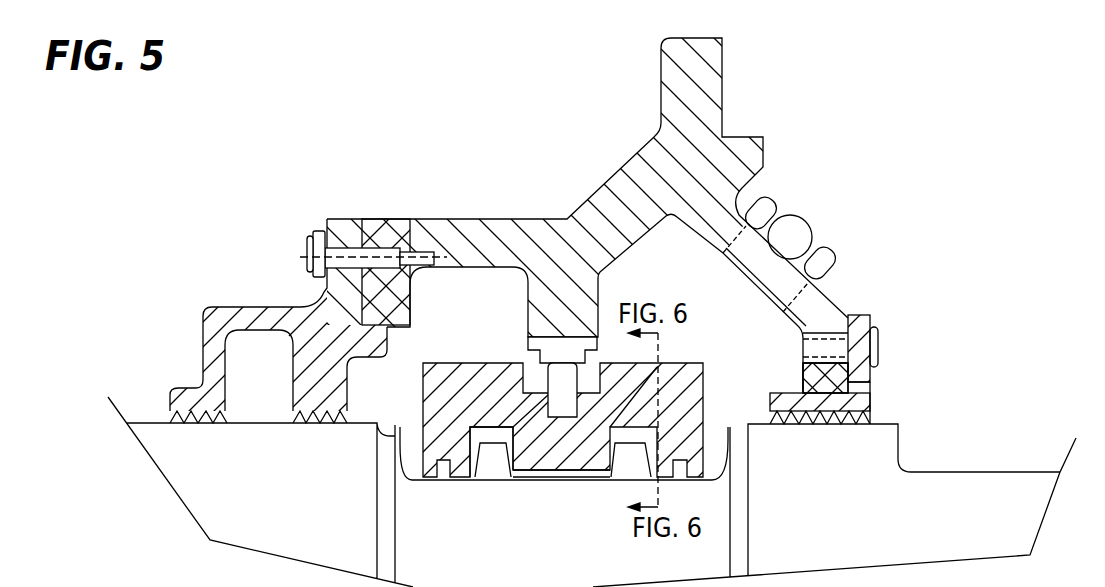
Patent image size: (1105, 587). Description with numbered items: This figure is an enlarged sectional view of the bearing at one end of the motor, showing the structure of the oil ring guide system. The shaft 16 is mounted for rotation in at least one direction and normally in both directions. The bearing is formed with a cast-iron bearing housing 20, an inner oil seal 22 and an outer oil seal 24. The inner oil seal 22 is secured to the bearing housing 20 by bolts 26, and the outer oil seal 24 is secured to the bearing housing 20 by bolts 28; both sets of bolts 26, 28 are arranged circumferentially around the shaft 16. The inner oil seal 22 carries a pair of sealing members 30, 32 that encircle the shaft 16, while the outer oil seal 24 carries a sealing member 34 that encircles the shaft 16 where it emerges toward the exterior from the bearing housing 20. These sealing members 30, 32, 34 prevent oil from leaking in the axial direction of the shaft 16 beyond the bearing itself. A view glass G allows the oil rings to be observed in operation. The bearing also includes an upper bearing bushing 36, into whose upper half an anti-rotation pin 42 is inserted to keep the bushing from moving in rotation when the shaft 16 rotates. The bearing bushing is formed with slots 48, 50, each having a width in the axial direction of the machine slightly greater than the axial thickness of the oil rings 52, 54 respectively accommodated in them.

The shaft 16 is at (955, 483).
The bearing housing 20 is at (543, 220).
The inner oil seal 22 is at (233, 280).
The outer oil seal 24 is at (900, 405).
The bolts 26 is at (312, 242).
The bolts 28 is at (878, 340).
The sealing member 30 is at (198, 425).
The sealing member 32 is at (318, 425).
The sealing member 34 is at (812, 424).
The upper bearing bushing 36 is at (455, 363).
The anti-rotation pin 42 is at (547, 410).
The slot 48 is at (480, 440).
The slot 50 is at (612, 476).
The oil ring 52 is at (500, 474).
The oil ring 54 is at (628, 476).
The view glass G is at (808, 235).